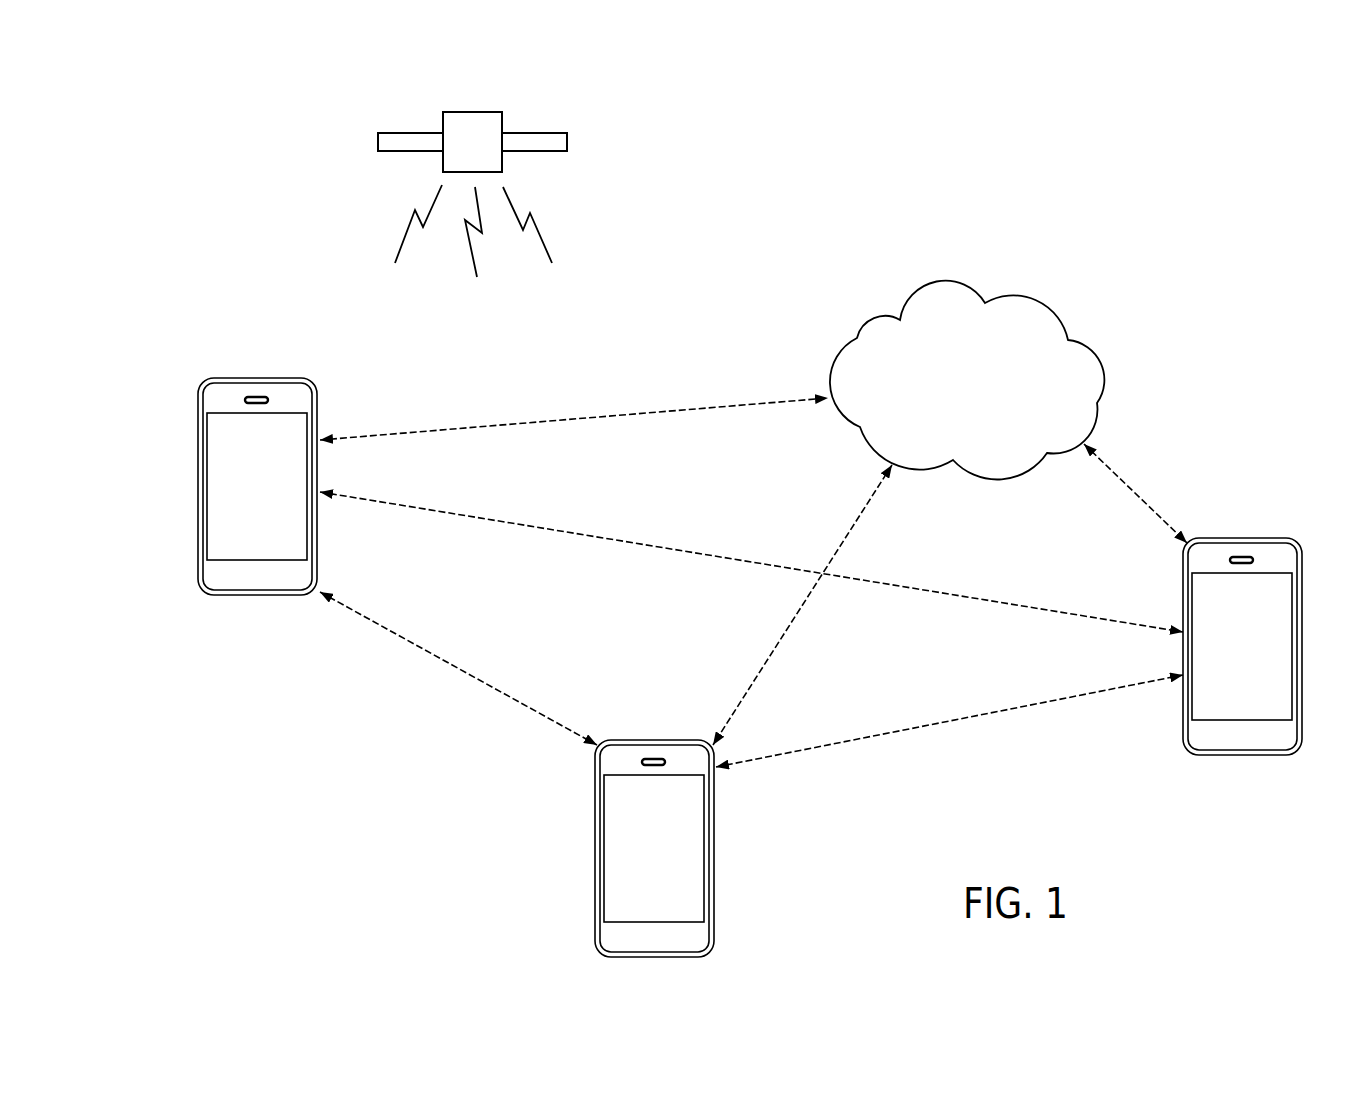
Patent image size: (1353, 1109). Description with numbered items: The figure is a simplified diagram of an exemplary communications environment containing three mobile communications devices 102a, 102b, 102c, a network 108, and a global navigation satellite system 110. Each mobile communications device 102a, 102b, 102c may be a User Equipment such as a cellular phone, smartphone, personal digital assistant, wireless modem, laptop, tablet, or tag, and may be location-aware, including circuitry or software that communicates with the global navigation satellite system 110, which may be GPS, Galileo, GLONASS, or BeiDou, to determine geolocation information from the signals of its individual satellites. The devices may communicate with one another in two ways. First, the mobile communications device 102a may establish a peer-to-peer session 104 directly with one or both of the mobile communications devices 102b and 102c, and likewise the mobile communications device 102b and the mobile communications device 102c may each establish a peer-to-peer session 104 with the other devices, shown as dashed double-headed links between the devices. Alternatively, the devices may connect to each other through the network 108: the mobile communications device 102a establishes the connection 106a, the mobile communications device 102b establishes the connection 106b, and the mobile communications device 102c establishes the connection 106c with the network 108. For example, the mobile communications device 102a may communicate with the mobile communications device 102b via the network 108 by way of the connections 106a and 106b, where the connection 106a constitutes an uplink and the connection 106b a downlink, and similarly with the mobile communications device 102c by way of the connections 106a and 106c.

The mobile communications device 102a is at (197, 430).
The mobile communications device 102b is at (595, 790).
The mobile communications device 102c is at (1183, 590).
The peer-to-peer session 104 is at (600, 537).
The connection 106a is at (555, 420).
The connection 106b is at (858, 518).
The connection 106c is at (1137, 492).
The network 108 is at (855, 338).
The global navigation satellite system 110 is at (502, 120).